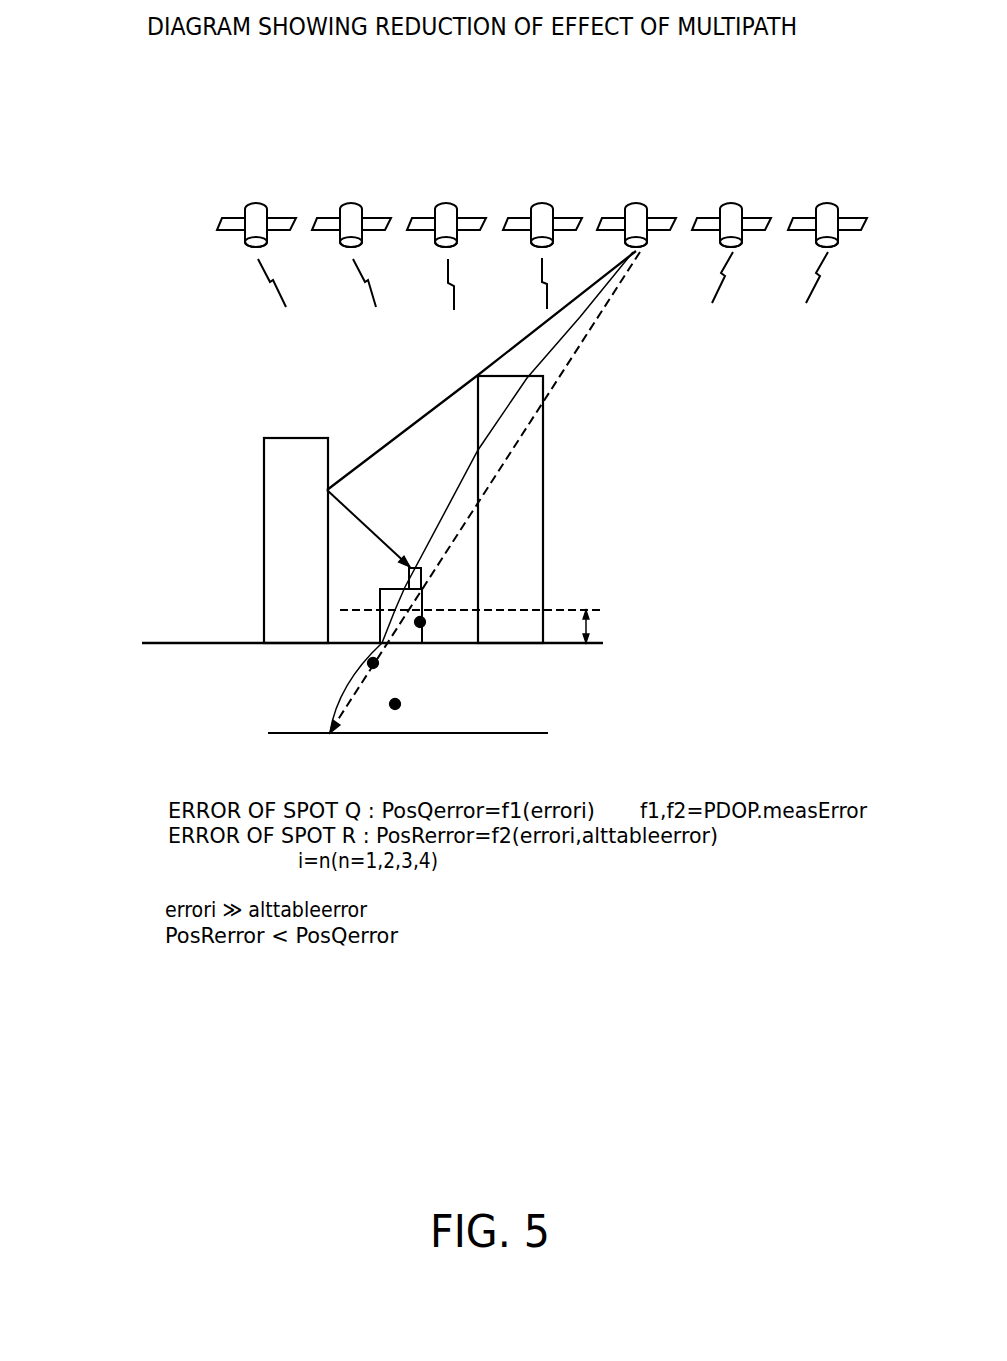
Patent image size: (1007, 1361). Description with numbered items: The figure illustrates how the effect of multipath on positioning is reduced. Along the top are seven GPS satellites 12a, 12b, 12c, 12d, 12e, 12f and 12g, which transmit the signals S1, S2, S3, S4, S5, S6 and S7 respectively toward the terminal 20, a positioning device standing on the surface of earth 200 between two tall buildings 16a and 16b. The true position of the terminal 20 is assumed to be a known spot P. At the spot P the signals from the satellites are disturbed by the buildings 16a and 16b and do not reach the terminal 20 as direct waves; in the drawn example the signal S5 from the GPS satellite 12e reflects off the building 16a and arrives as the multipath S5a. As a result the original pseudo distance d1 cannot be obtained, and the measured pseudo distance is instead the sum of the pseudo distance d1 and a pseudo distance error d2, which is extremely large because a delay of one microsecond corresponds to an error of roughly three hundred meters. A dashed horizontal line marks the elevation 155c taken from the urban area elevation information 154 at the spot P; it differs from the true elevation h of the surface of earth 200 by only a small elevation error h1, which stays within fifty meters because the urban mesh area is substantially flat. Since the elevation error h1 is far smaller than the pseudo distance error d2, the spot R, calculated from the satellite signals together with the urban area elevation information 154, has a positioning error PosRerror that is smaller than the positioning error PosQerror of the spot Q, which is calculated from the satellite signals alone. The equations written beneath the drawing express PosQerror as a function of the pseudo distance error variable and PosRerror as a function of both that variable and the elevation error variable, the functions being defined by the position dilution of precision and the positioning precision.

The GPS satellite 12a is at (256, 202).
The GPS satellite 12b is at (351, 202).
The GPS satellite 12c is at (446, 202).
The GPS satellite 12d is at (542, 202).
The GPS satellite 12e is at (636, 202).
The GPS satellite 12f is at (731, 202).
The GPS satellite 12g is at (827, 202).
The building 16a is at (293, 437).
The building 16b is at (545, 424).
The terminal 20 is at (402, 645).
The surface of earth 200 is at (183, 641).
The urban area elevation information 154 is at (549, 583).
The elevation 155c is at (597, 608).
The signal S1 is at (261, 272).
The signal S2 is at (355, 272).
The signal S3 is at (447, 272).
The signal S4 is at (541, 272).
The signal S5 is at (618, 263).
The multipath S5a is at (460, 388).
The signal S6 is at (724, 272).
The signal S7 is at (819, 272).
The pseudo distance d1 is at (457, 486).
The pseudo distance error d2 is at (338, 693).
The elevation error h1 is at (592, 626).
The true elevation h is at (592, 646).
The spot P is at (426, 622).
The positioning spot Q is at (402, 704).
The spot R is at (374, 670).